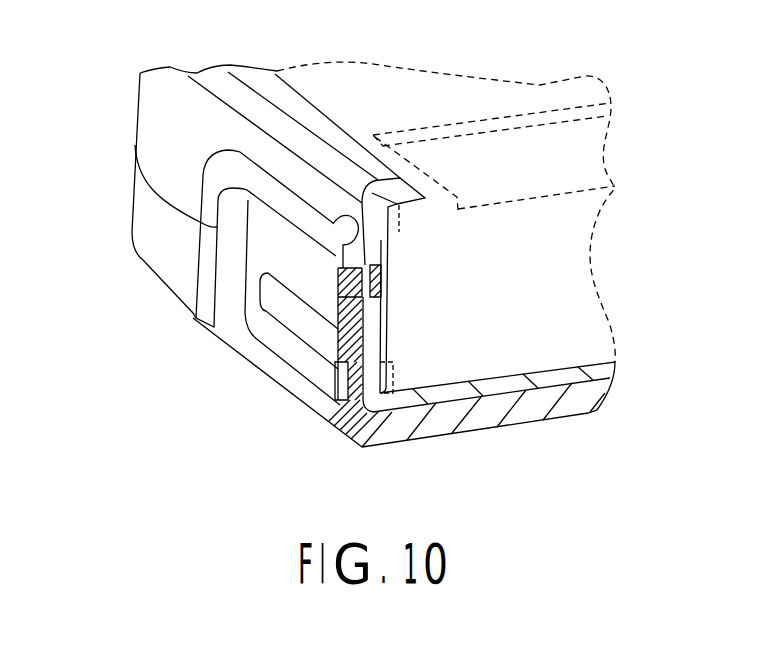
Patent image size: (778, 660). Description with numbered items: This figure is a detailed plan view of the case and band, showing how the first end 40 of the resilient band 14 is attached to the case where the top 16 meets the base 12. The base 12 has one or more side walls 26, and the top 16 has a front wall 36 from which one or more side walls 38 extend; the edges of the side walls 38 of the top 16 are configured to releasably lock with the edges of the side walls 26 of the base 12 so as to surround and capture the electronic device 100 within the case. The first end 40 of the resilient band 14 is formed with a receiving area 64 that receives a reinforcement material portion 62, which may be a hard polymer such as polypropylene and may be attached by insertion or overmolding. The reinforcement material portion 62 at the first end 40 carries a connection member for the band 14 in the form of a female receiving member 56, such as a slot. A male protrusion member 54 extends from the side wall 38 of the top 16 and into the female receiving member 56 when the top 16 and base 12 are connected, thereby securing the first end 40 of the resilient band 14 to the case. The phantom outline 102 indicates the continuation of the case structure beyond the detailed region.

The base 12 is at (348, 428).
The resilient band 14 is at (457, 437).
The top 16 is at (360, 218).
The side walls 26 is at (157, 258).
The front wall 36 is at (280, 100).
The side walls 38 is at (158, 92).
The first end 40 is at (201, 174).
The male protrusion members 54 is at (373, 300).
The female receiving members 56 is at (376, 303).
The reinforcement material portion 62 is at (338, 300).
The receiving area 64 is at (349, 382).
The electronic device 100 is at (585, 225).
The phantom rail top surface 102 is at (537, 100).